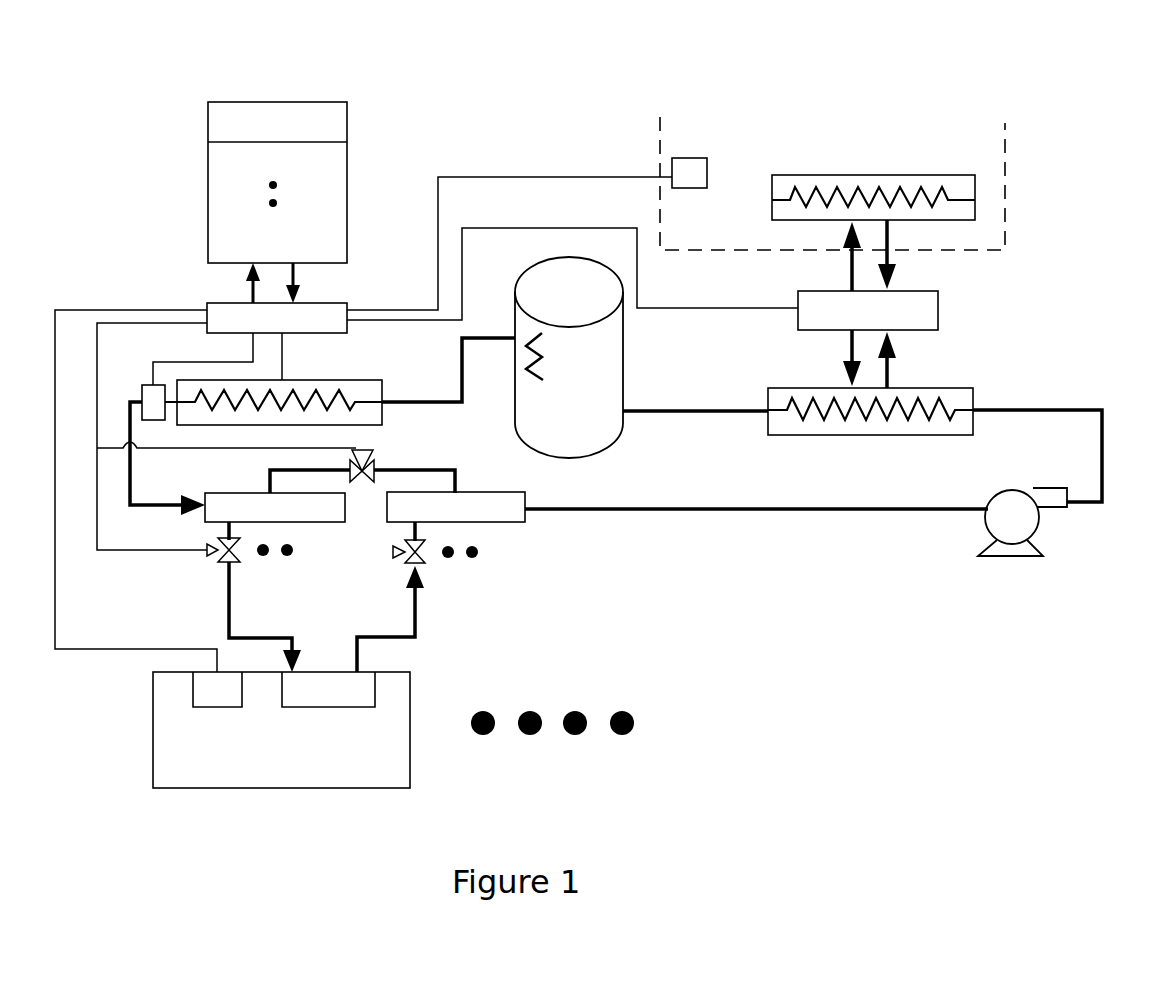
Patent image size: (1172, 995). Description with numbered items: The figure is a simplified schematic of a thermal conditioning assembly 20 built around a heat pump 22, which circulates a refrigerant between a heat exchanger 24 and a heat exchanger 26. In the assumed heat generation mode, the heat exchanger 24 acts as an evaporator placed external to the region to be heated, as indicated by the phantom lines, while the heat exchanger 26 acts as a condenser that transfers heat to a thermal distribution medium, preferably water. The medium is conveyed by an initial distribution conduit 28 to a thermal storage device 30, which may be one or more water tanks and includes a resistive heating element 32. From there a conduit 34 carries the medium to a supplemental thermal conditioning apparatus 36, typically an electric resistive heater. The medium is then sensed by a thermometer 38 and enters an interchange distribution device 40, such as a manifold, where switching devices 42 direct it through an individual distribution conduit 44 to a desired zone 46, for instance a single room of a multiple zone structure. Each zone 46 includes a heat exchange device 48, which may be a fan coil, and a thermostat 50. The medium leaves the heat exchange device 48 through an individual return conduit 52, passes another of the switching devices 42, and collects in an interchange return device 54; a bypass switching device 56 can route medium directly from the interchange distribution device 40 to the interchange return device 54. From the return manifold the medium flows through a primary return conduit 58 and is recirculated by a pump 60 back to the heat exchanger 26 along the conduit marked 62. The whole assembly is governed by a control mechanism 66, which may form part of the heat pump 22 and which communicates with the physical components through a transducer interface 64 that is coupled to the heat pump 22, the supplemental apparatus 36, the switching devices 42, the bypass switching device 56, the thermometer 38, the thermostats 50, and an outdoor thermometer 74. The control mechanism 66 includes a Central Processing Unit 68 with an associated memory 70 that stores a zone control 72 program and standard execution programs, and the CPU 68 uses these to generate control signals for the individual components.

The thermal conditioning assembly 20 is at (494, 114).
The heat pump 22 is at (938, 303).
The heat exchanger 24 is at (921, 175).
The heat exchanger 26 is at (815, 435).
The initial distribution conduit 28 is at (735, 410).
The thermal storage device 30 is at (582, 458).
The resistive heating element 32 is at (543, 361).
The conduit 34 is at (462, 372).
The thermal conditioning apparatus 36 is at (359, 378).
The thermometer 38 is at (149, 385).
The interchange distribution device 40 is at (228, 493).
The switching devices 42 is at (223, 572).
The individual distribution conduit 44 is at (233, 585).
The zone 46 is at (102, 742).
The heat exchange device 48 is at (305, 707).
The thermostat 50 is at (213, 707).
The individual return conduit 52 is at (419, 595).
The interchange return device 54 is at (495, 492).
The bypass switching device 56 is at (371, 462).
The primary return conduit 58 is at (745, 510).
The pump 60 is at (1005, 490).
The fluid line 62 is at (1105, 440).
The transducer interface 64 is at (212, 303).
The control mechanism 66 is at (124, 192).
The Central Processing Unit 68 is at (208, 124).
The memory 70 is at (208, 155).
The zone control program 72 is at (347, 233).
The outdoor thermometer 74 is at (707, 165).